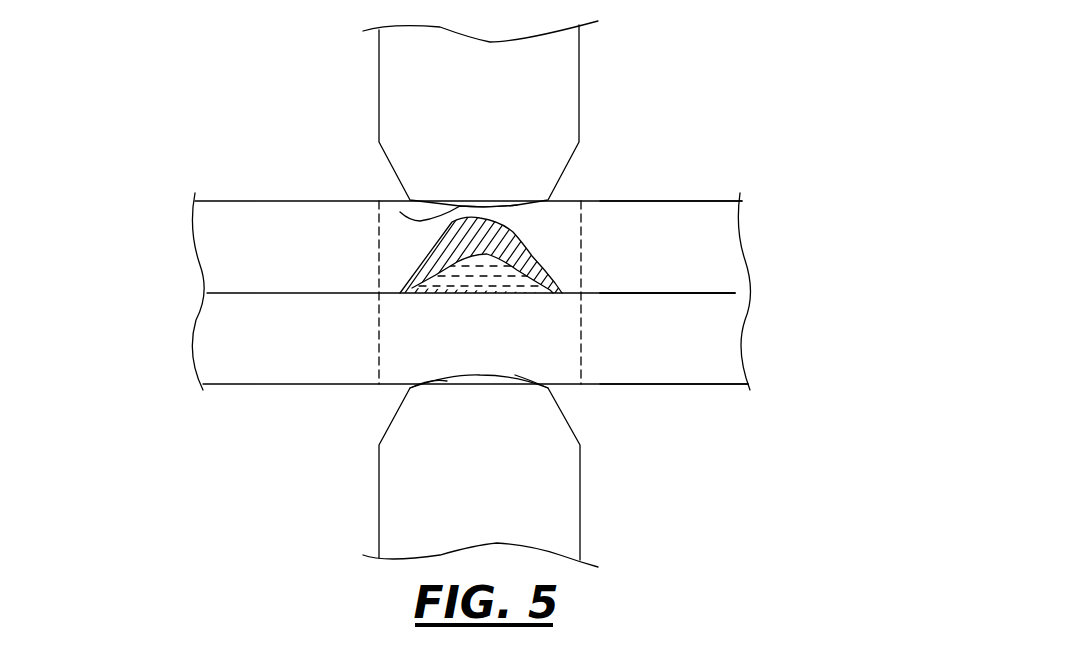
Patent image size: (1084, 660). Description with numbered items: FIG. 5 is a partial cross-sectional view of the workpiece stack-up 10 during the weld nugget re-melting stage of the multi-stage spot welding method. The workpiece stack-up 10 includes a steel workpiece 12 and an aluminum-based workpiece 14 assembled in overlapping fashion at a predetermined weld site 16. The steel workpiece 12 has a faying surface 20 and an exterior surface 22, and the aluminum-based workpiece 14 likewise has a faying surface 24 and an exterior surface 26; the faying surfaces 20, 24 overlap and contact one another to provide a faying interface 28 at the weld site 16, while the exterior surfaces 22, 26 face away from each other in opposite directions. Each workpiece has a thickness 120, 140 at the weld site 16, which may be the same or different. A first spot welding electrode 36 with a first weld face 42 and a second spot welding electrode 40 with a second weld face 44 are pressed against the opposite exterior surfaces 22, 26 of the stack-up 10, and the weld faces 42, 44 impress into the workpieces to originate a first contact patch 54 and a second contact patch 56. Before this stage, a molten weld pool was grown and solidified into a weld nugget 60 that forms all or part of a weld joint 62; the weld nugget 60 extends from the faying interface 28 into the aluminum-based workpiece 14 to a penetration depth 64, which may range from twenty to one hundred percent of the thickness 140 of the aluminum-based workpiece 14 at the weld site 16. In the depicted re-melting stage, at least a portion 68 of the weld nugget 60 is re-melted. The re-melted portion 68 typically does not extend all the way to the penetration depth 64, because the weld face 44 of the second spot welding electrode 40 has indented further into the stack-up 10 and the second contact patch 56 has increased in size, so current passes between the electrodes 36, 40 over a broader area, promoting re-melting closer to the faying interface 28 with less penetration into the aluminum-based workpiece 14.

The workpiece stack-up 10 is at (178, 280).
The steel workpiece 12 is at (223, 362).
The aluminum-based workpiece 14 is at (217, 220).
The weld site 16 is at (378, 313).
The faying surface of the steel workpiece 20 is at (738, 292).
The exterior surface of the steel workpiece 22 is at (717, 385).
The faying surface of the aluminum-based workpiece 24 is at (738, 295).
The exterior surface of the aluminum-based workpiece 26 is at (703, 201).
The faying interface 28 is at (568, 292).
The first spot welding electrode 36 is at (547, 485).
The second spot welding electrode 40 is at (533, 78).
The first weld face 42 is at (447, 381).
The second weld face 44 is at (400, 212).
The first contact patch 54 is at (522, 384).
The second contact patch 56 is at (517, 205).
The weld nugget 60 is at (445, 238).
The weld joint 62 is at (531, 235).
The penetration depth 64 is at (400, 216).
The re-melted portion of the weld nugget 68 is at (460, 280).
The thickness of the steel workpiece 120 is at (261, 293).
The thickness of the aluminum-based workpiece 140 is at (261, 201).